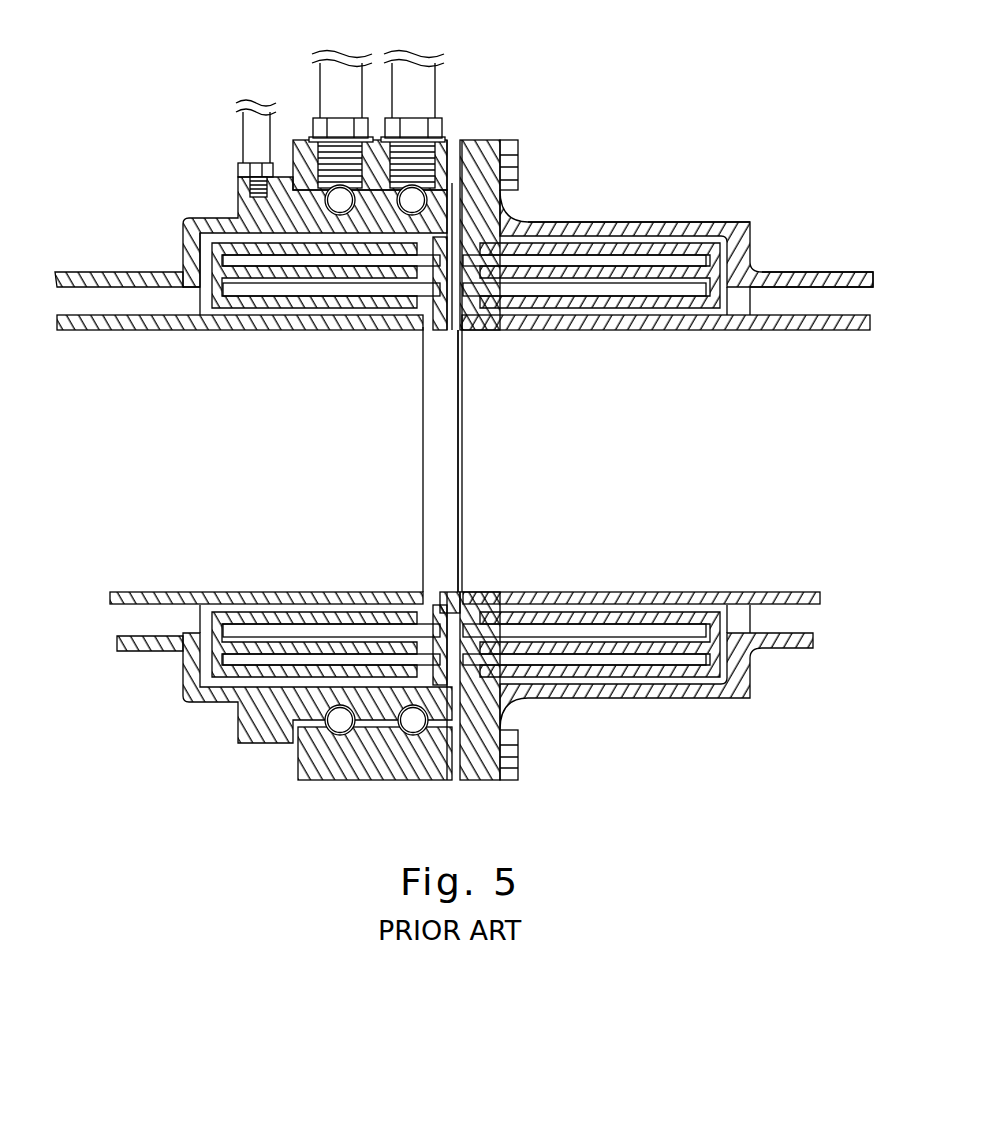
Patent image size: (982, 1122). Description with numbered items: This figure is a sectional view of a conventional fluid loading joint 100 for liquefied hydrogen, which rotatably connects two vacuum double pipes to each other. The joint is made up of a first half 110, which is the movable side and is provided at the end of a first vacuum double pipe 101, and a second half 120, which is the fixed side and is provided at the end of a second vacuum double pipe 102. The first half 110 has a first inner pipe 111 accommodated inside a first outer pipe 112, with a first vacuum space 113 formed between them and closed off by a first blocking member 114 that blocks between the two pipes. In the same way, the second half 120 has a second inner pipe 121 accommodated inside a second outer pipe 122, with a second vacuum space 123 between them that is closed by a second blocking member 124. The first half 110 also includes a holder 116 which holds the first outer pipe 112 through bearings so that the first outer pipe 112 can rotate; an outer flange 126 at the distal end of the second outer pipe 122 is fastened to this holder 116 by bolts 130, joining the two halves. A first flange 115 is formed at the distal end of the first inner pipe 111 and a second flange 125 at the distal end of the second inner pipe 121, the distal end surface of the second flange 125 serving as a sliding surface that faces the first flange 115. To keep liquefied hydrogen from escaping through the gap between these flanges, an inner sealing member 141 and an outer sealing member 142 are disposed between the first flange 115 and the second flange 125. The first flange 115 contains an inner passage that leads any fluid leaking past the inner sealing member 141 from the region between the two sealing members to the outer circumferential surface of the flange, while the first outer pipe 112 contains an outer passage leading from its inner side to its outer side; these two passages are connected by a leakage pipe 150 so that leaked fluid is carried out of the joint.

The fluid loading joint 100 is at (664, 105).
The first vacuum double pipe 101 is at (102, 271).
The second vacuum double pipe 102 is at (830, 271).
The first half 110 is at (185, 219).
The first inner pipe 111 is at (173, 331).
The first outer pipe 112 is at (225, 216).
The first vacuum space 113 is at (191, 295).
The first blocking member 114 is at (263, 330).
The first flange 115 is at (433, 252).
The holder 116 is at (293, 160).
The second half 120 is at (716, 220).
The second inner pipe 121 is at (688, 331).
The second outer pipe 122 is at (645, 221).
The second vacuum space 123 is at (735, 302).
The second blocking member 124 is at (615, 302).
The second flange 125 is at (500, 318).
The outer flange 126 is at (478, 150).
The bolts 130 is at (520, 165).
The inner sealing member 141 is at (450, 333).
The outer sealing member 142 is at (470, 327).
The leakage pipe 150 is at (378, 266).